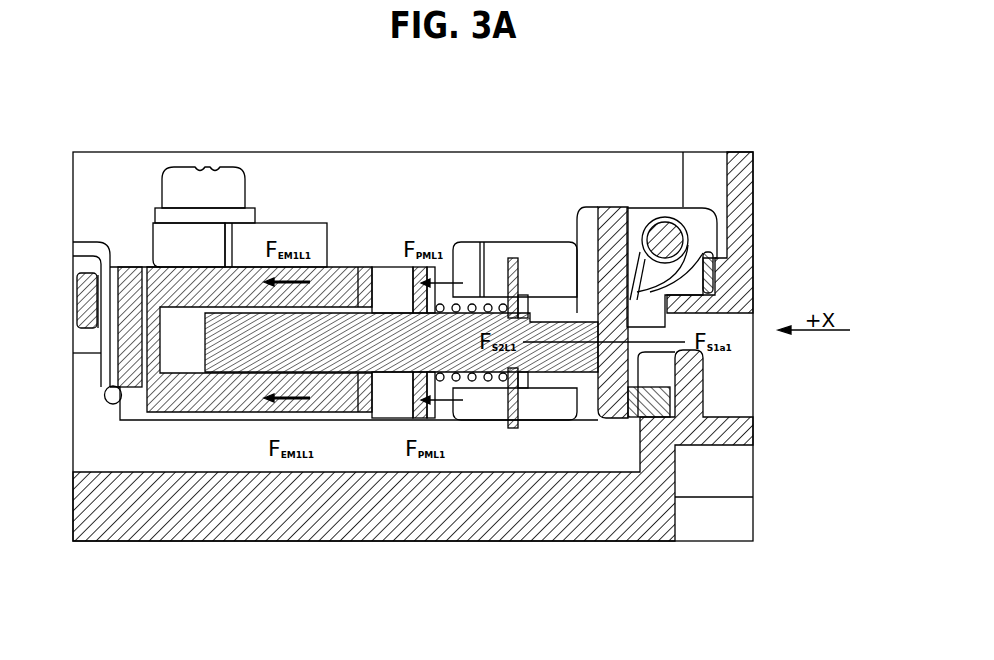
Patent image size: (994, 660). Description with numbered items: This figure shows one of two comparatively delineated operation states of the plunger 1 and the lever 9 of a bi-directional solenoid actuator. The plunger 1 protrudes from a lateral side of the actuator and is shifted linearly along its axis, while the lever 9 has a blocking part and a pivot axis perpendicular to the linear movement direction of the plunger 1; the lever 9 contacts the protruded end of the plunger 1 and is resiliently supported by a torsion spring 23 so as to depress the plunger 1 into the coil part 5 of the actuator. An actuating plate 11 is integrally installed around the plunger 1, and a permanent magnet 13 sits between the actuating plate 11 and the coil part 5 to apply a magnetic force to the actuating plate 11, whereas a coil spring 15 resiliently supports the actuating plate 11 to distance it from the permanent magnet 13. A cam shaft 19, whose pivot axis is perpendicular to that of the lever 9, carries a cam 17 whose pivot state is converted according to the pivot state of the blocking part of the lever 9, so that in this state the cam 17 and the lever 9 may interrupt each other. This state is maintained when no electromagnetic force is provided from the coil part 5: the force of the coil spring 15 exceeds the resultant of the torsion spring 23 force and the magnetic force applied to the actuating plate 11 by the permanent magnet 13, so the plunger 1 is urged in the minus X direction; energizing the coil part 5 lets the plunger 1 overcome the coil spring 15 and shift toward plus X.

The plunger 1 is at (580, 217).
The coil part 5 is at (200, 280).
The lever 9 is at (612, 207).
The actuating plate 11 is at (509, 258).
The permanent magnet 13 is at (388, 273).
The coil spring 15 is at (476, 290).
The cam 17 is at (667, 373).
The cam shaft 19 is at (468, 514).
The torsion spring 23 is at (708, 262).